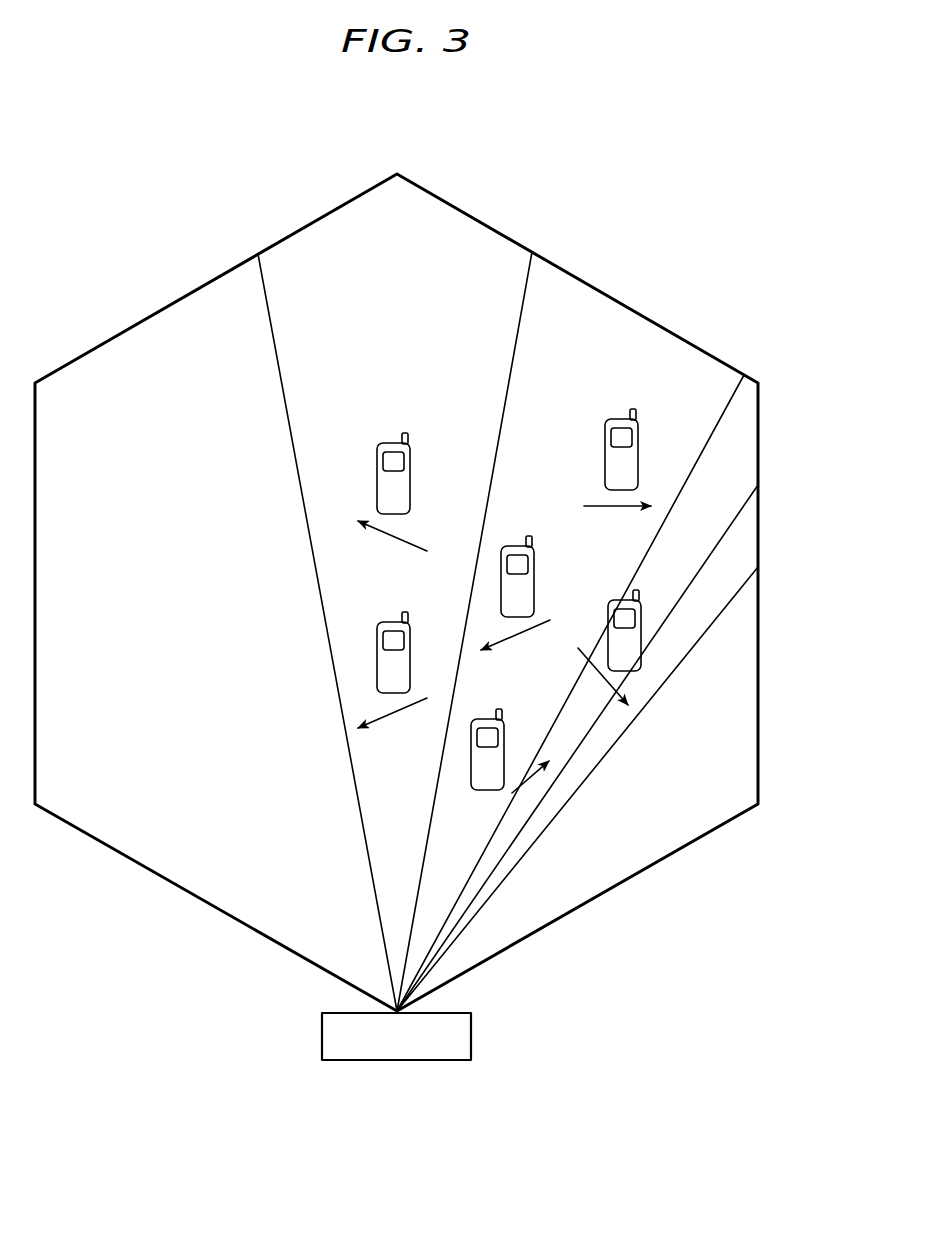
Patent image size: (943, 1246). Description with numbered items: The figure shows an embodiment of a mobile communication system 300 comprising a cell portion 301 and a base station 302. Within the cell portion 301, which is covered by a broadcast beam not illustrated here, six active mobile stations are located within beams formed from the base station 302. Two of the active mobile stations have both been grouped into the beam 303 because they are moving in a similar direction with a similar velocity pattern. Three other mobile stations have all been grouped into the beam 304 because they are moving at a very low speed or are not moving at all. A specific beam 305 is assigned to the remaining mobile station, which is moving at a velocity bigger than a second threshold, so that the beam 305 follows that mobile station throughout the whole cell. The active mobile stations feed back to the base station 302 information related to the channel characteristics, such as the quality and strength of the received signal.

The mobile communication system 300 is at (657, 120).
The cell portion 301 is at (141, 341).
The base station 302 is at (381, 1065).
The beam 303 is at (318, 243).
The beam 304 is at (632, 325).
The beam 305 is at (741, 435).